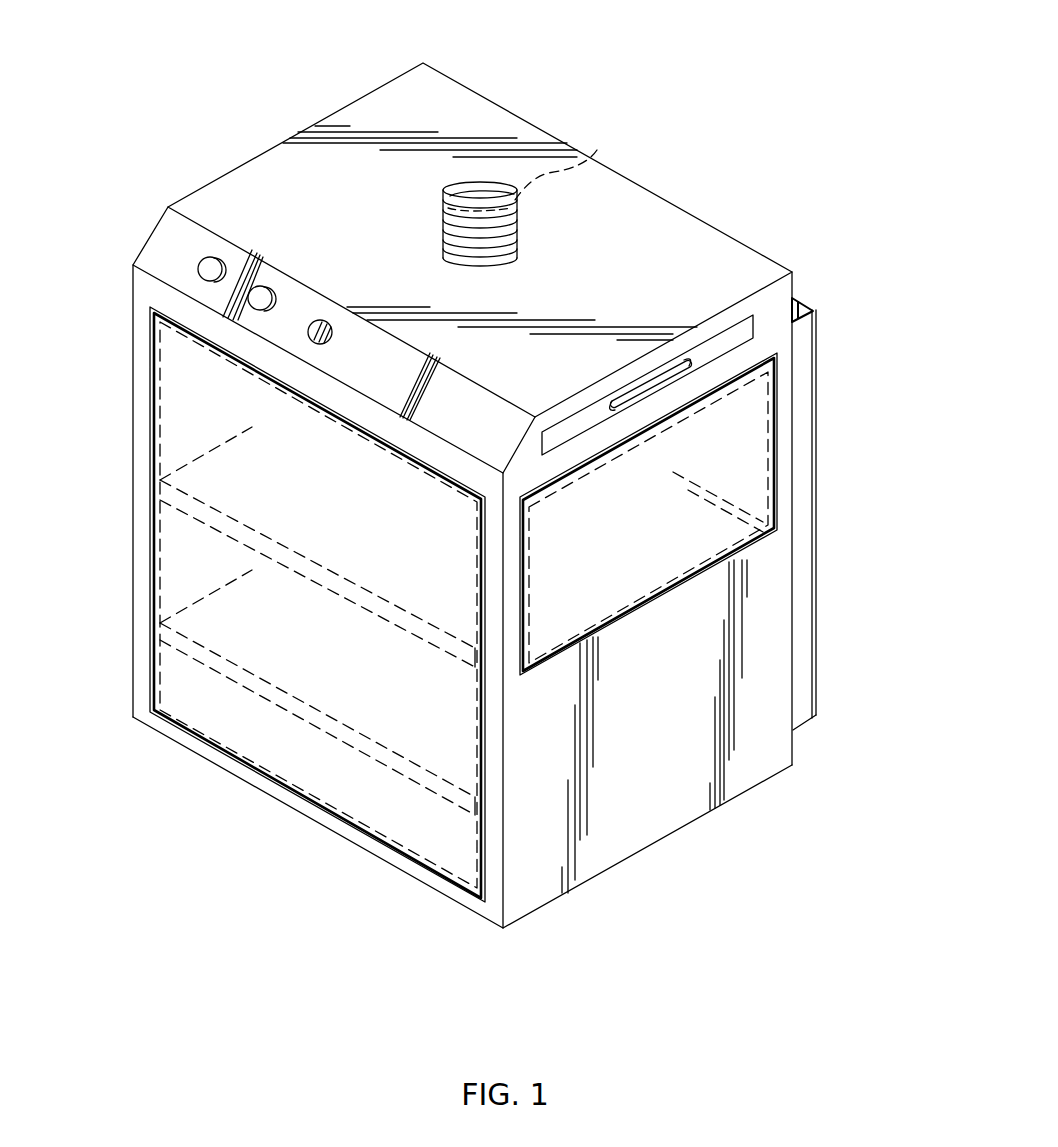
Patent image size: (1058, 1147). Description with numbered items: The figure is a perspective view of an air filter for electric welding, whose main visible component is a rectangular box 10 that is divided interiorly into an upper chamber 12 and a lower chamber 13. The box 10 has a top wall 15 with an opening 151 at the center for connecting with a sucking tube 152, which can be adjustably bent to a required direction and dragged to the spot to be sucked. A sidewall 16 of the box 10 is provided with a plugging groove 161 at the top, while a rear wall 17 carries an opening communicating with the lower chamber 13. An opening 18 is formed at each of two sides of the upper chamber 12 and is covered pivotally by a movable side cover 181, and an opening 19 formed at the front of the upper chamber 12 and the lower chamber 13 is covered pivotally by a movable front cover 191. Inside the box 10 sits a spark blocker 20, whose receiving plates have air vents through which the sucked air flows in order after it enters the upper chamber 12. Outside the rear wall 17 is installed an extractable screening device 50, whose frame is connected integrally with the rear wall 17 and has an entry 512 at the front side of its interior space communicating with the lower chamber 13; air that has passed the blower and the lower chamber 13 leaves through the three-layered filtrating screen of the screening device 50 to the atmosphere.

The box 10 is at (294, 121).
The upper chamber 12 is at (290, 520).
The lower chamber 13 is at (240, 633).
The top wall 15 is at (612, 205).
The opening 151 is at (597, 148).
The sucking tube 152 is at (482, 203).
The sidewall 16 is at (703, 737).
The plugging groove 161 is at (742, 317).
The rear wall 17 is at (793, 612).
The opening 18 is at (712, 541).
The movable side cover 181 is at (743, 442).
The opening 19 is at (168, 385).
The movable front cover 191 is at (327, 697).
The spark blocker 20 is at (728, 370).
The extractable screening device 50 is at (824, 711).
The entry 512 is at (808, 306).